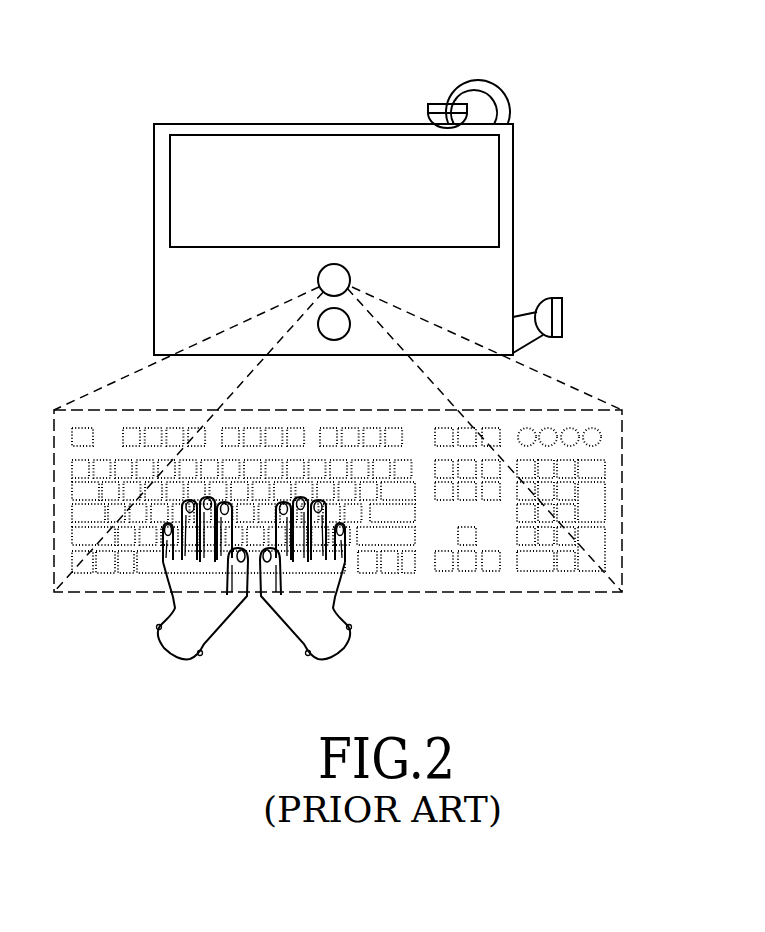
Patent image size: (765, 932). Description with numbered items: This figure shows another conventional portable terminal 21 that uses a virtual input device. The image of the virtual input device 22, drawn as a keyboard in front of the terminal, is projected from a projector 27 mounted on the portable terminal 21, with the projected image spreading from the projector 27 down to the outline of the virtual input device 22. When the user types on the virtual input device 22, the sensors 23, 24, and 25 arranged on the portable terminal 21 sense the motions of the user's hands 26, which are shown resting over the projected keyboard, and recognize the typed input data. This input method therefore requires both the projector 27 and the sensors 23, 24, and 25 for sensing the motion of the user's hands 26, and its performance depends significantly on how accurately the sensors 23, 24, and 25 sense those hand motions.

The portable terminal 21 is at (157, 99).
The virtual input device 22 is at (622, 500).
The sensor 23 is at (334, 340).
The sensor 24 is at (584, 285).
The sensor 25 is at (503, 67).
The user's hands 26 is at (343, 650).
The projector 27 is at (320, 281).